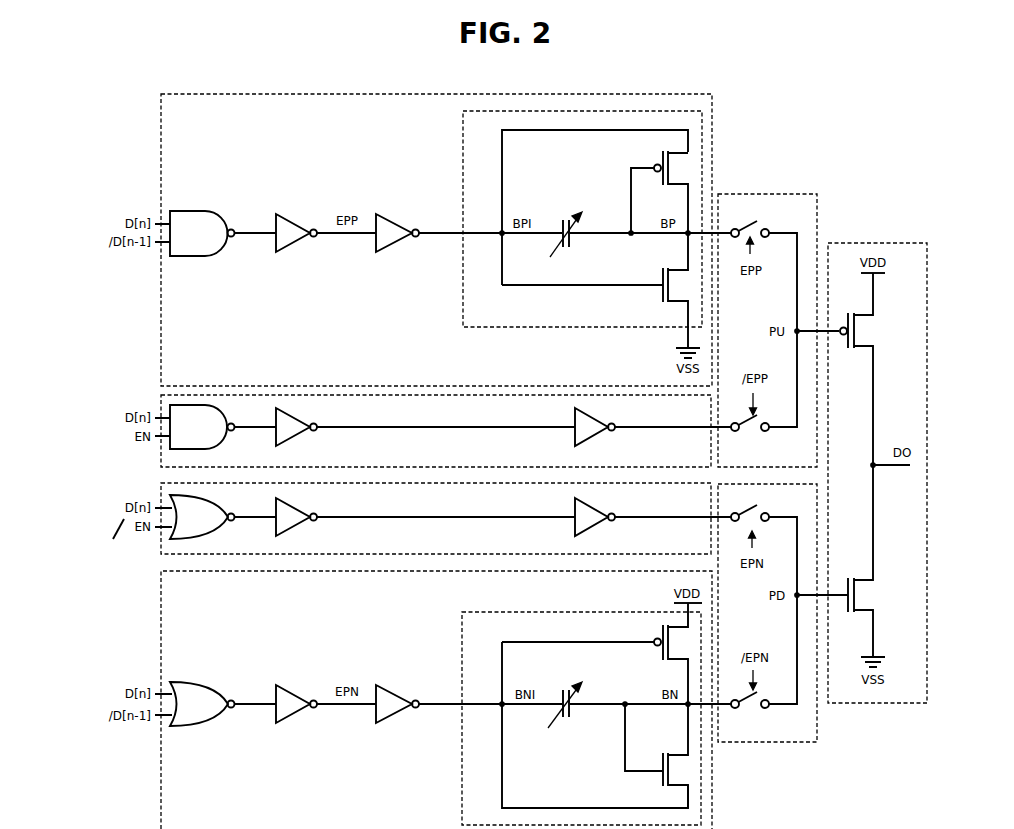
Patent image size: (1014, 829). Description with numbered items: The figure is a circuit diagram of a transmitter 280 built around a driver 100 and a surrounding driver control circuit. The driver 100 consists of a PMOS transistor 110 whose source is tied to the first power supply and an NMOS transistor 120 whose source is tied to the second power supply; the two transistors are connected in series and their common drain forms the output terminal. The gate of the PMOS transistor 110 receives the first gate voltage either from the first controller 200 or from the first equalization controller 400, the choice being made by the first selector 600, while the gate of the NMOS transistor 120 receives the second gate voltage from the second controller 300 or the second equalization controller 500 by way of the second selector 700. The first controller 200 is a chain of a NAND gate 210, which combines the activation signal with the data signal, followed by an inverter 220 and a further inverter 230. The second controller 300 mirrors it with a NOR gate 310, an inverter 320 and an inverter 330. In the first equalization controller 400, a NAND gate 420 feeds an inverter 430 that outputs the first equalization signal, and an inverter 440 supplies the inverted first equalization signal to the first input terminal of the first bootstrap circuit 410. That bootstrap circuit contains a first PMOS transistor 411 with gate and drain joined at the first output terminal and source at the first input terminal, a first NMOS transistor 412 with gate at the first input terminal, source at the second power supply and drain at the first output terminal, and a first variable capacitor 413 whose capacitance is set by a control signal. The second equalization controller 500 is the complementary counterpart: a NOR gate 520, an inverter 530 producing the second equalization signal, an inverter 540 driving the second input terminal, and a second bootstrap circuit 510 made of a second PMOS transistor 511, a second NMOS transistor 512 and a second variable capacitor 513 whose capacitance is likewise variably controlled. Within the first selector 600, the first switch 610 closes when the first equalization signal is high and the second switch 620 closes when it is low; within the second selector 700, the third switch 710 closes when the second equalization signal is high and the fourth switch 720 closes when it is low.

The driver 100 is at (927, 343).
The PMOS transistor 110 is at (866, 331).
The NMOS transistor 120 is at (871, 600).
The first controller 200 is at (711, 436).
The NAND gate 210 is at (202, 427).
The inverter 220 is at (300, 423).
The inverter 230 is at (568, 421).
The transmitter 280 is at (939, 113).
The second controller 300 is at (711, 523).
The NOR gate 310 is at (202, 517).
The inverter 320 is at (300, 513).
The inverter 330 is at (568, 511).
The first equalization controller 400 is at (712, 162).
The first bootstrap circuit 410 is at (463, 322).
The first PMOS transistor 411 is at (658, 156).
The first NMOS transistor 412 is at (658, 292).
The first variable capacitor 413 is at (565, 218).
The NAND gate 420 is at (202, 233).
The inverter 430 is at (292, 213).
The inverter 440 is at (393, 213).
The second equalization controller 500 is at (712, 792).
The second bootstrap circuit 510 is at (462, 782).
The second PMOS transistor 511 is at (658, 653).
The second NMOS transistor 512 is at (658, 782).
The second variable capacitor 513 is at (568, 720).
The NOR gate 520 is at (202, 704).
The inverter 530 is at (292, 685).
The inverter 540 is at (393, 685).
The first selector 600 is at (817, 207).
The first switch 610 is at (768, 229).
The second switch 620 is at (752, 432).
The second selector 700 is at (817, 733).
The third switch 710 is at (768, 513).
The fourth switch 720 is at (752, 709).